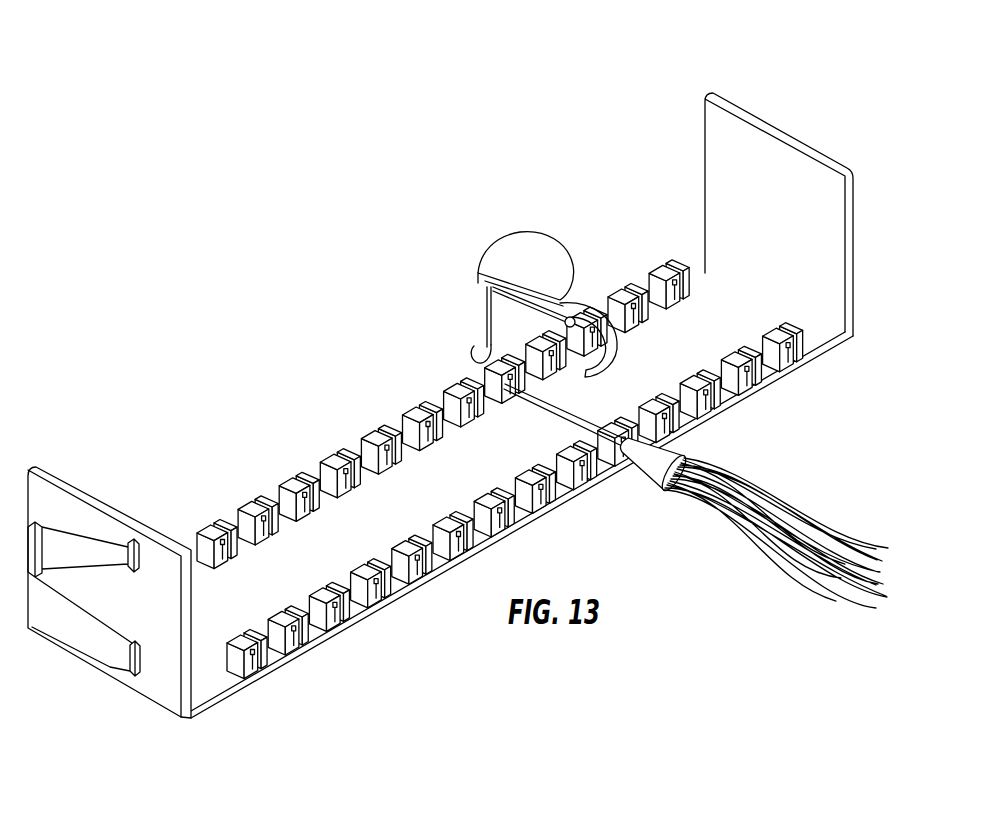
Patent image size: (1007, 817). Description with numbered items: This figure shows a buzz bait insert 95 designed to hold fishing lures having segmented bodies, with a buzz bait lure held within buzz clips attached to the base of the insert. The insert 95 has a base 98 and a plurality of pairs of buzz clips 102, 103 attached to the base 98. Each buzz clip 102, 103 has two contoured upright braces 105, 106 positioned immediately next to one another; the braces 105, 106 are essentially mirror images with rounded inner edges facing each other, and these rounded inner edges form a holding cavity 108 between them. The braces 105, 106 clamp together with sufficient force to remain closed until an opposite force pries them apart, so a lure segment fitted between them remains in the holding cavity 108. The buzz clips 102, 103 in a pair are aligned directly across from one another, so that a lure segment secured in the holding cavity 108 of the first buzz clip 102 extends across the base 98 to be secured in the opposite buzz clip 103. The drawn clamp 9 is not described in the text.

The insert 95 is at (705, 63).
The cable clamp 9 is at (513, 243).
The base 98 is at (443, 489).
The first buzz clip 102 is at (288, 493).
The second buzz clip 103 is at (368, 566).
The contoured upright brace 105 is at (263, 542).
The contoured upright brace 106 is at (277, 530).
The holding cavity 108 is at (352, 457).